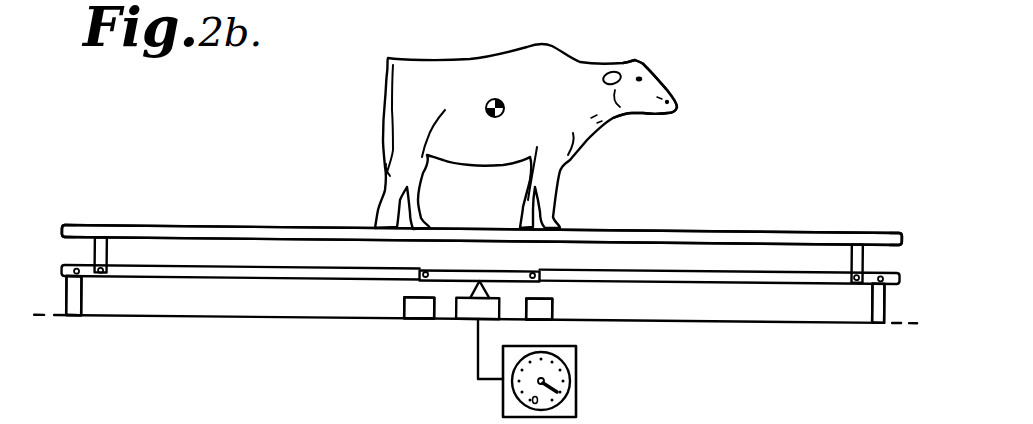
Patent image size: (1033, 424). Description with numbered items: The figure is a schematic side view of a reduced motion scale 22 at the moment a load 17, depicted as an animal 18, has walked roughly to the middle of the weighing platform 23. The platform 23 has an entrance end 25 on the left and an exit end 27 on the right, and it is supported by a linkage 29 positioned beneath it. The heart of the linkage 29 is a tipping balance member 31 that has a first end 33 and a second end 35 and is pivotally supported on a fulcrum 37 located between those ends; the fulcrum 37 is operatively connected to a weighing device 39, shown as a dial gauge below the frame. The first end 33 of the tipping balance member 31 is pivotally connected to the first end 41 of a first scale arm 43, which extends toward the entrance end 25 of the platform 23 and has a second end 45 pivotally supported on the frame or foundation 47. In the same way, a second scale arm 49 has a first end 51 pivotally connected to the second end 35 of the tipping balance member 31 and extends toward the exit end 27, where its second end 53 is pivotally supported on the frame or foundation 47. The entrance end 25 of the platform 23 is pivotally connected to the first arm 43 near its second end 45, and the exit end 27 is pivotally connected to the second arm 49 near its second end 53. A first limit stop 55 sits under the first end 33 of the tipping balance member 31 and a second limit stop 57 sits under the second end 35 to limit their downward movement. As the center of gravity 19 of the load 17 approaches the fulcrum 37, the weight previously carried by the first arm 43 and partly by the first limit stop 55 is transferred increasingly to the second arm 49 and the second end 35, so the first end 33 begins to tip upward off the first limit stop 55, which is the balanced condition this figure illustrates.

The load 17 is at (417, 54).
The animal 18 is at (578, 62).
The center of gravity 19 is at (503, 100).
The reduced motion scale 22 is at (313, 172).
The platform 23 is at (703, 230).
The entrance end 25 is at (56, 228).
The exit end 27 is at (900, 238).
The linkage 29 is at (256, 292).
The tipping balance member 31 is at (457, 268).
The first end of tipping balance member 33 is at (420, 272).
The second end of tipping balance member 35 is at (540, 278).
The fulcrum 37 is at (484, 284).
The weighing device 39 is at (577, 381).
The first end of first scale arm 41 is at (412, 281).
The first scale arm 43 is at (208, 268).
The second end of first scale arm 45 is at (62, 268).
The frame or foundation 47 is at (67, 298).
The second scale arm 49 is at (722, 287).
The first end of second scale arm 51 is at (556, 285).
The second end of second scale arm 53 is at (910, 273).
The first limit stop 55 is at (407, 312).
The second limit stop 57 is at (555, 314).